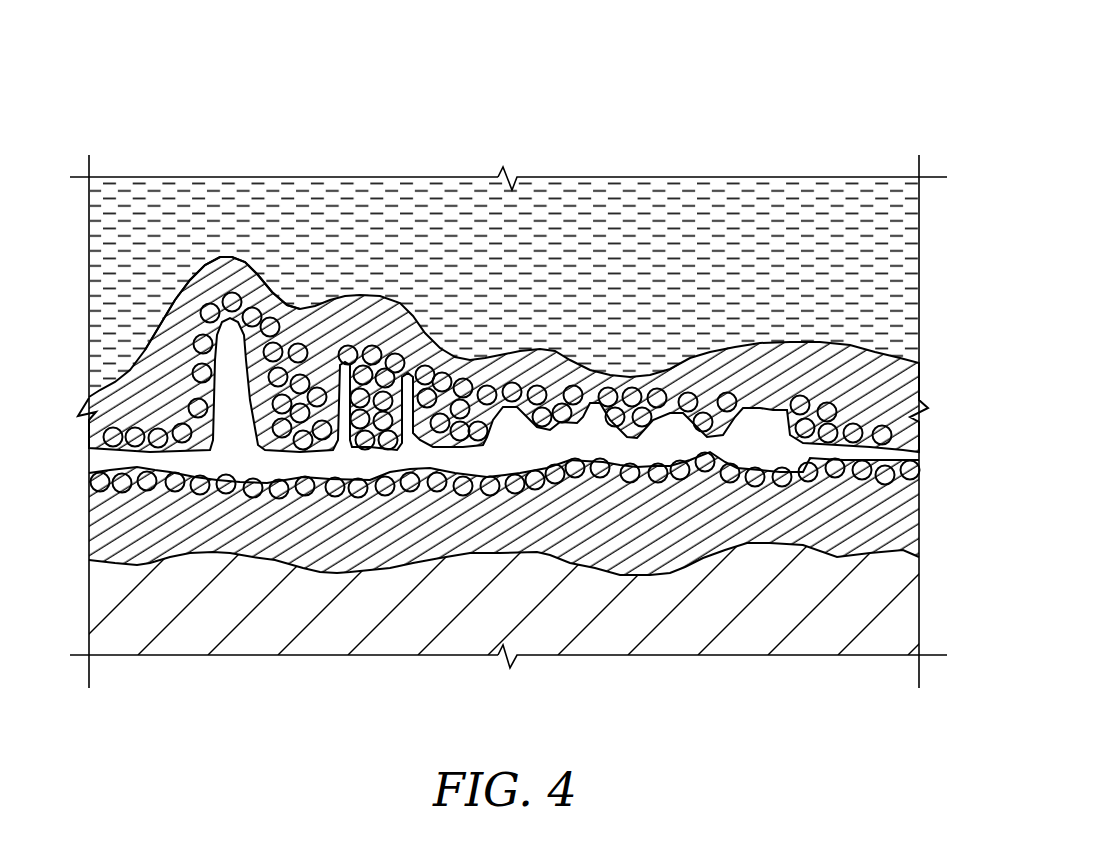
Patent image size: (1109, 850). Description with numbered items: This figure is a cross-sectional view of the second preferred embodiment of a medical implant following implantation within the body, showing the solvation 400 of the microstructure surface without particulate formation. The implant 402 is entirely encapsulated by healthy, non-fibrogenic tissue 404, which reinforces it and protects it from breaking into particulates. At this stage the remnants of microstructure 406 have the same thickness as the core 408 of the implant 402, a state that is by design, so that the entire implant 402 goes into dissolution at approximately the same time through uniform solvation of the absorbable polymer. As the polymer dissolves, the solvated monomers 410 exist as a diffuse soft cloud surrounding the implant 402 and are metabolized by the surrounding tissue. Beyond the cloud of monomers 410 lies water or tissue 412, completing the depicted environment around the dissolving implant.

The solvation 400 is at (840, 73).
The implant 402 is at (757, 423).
The non-fibrogenic tissue 404 is at (421, 375).
The remnants of microstructure 406 is at (233, 352).
The core 408 is at (268, 457).
The solvated monomers 410 is at (553, 373).
The water or tissue 412 is at (787, 205).